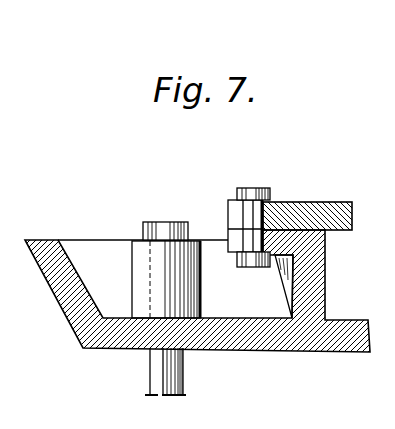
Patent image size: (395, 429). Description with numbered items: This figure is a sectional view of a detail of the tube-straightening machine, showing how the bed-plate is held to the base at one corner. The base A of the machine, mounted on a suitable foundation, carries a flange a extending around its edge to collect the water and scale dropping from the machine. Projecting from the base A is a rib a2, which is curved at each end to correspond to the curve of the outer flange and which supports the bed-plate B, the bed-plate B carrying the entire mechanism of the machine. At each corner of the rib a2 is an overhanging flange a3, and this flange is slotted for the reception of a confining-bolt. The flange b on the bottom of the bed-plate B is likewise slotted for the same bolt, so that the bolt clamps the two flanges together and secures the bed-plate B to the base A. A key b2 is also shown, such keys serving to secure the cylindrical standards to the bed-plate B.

The flange a is at (197, 312).
The rib a2 is at (317, 302).
The overhanging flange a3 is at (233, 239).
The flange b is at (228, 203).
The key b2 is at (247, 188).
The base A is at (266, 302).
The bed-plate B is at (307, 204).